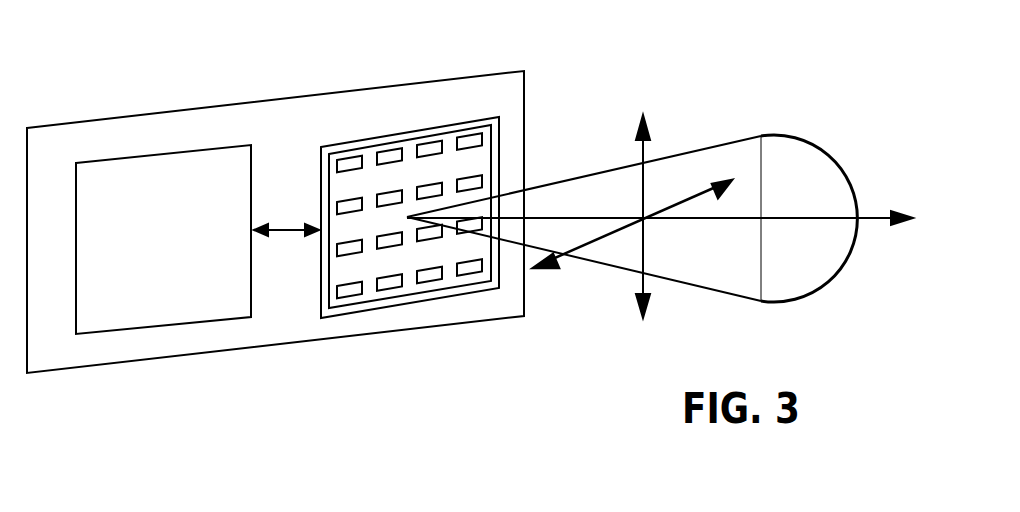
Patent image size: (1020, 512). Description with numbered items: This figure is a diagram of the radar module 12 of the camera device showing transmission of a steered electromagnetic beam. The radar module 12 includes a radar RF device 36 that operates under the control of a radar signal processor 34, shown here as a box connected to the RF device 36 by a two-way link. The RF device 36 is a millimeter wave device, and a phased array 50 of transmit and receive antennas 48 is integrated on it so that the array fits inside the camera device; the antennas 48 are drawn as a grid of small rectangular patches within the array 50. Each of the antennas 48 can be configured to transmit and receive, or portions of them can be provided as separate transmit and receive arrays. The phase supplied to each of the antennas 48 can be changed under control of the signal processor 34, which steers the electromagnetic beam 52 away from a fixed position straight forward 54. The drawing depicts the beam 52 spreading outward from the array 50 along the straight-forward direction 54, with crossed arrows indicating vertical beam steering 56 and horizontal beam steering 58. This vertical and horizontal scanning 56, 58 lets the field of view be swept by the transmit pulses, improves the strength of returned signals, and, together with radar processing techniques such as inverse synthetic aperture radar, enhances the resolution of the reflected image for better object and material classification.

The radar module 12 is at (303, 348).
The radar signal processor 34 is at (182, 325).
The radar RF device 36 is at (498, 288).
The antennas 48 is at (338, 207).
The phased array 50 is at (450, 132).
The electromagnetic beam 52 is at (766, 133).
The fixed position straight forward 54 is at (865, 217).
The vertical beam steering 56 is at (643, 160).
The horizontal beam steering 58 is at (698, 190).